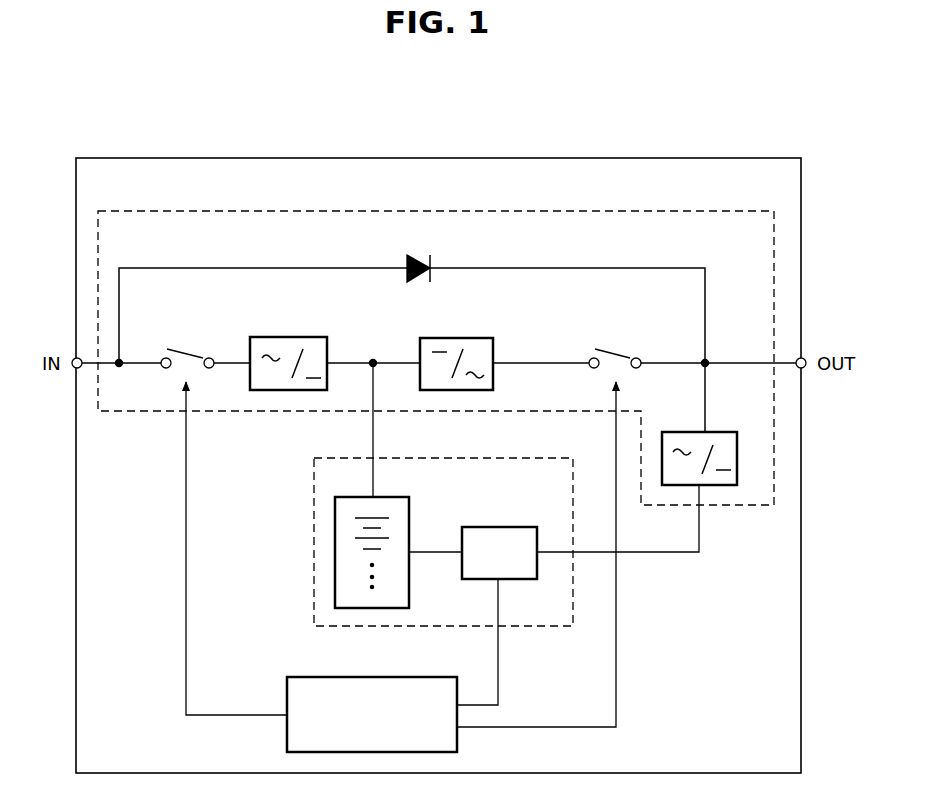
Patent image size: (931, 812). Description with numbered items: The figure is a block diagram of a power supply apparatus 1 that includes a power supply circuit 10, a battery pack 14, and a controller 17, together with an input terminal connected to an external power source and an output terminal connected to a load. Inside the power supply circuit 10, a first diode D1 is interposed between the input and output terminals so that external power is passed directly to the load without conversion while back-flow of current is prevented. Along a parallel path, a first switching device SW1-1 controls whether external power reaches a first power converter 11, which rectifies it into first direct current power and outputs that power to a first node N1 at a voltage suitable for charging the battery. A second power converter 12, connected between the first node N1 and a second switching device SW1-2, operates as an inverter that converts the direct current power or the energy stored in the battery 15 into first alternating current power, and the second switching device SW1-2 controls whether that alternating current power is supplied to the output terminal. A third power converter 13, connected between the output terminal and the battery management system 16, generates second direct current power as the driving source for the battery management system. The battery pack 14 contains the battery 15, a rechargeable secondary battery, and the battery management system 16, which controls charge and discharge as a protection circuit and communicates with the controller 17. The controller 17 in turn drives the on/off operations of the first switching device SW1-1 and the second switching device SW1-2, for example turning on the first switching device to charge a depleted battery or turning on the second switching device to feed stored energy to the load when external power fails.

The power supply apparatus 1 is at (675, 130).
The power supply circuit 10 is at (543, 212).
The first power converter 11 is at (293, 337).
The second power converter 12 is at (462, 338).
The third power converter 13 is at (717, 432).
The battery pack 14 is at (500, 458).
The battery 15 is at (390, 497).
The battery management system (BMS) 16 is at (502, 527).
The controller 17 is at (375, 677).
The first diode D1 is at (412, 297).
The first node N1 is at (372, 414).
The first switching device SW1-1 is at (183, 346).
The second switching device SW1-2 is at (611, 346).